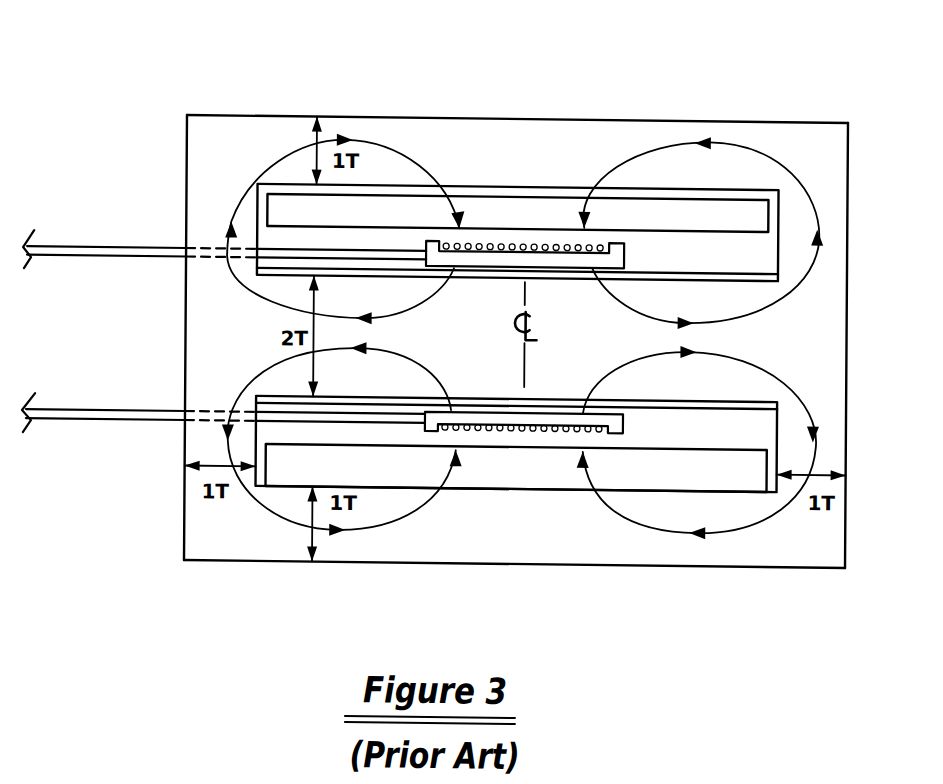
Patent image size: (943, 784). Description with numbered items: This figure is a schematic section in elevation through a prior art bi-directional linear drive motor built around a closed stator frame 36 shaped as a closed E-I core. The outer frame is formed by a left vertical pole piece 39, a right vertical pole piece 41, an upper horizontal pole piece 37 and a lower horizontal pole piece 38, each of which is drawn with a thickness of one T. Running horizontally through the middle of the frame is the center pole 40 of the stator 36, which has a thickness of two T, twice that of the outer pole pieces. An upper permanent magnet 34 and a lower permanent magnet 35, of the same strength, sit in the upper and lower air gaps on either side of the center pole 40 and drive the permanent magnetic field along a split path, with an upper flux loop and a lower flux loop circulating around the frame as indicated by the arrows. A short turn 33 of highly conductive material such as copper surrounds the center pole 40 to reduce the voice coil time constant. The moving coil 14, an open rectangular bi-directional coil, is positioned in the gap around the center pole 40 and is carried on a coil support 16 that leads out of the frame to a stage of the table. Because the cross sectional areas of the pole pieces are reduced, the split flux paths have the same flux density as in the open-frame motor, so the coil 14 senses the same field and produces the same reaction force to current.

The bi-directional moving coil 14 is at (514, 244).
The coil support 16 is at (116, 256).
The short turn 33 is at (258, 276).
The permanent magnet 34 is at (283, 194).
The permanent magnet 35 is at (280, 474).
The closed stator frame 36 is at (516, 333).
The upper horizontal pole piece 37 is at (468, 127).
The lower horizontal pole piece 38 is at (533, 549).
The vertical pole piece 39 is at (197, 338).
The center pole 40 is at (584, 317).
The vertical pole piece 41 is at (824, 324).